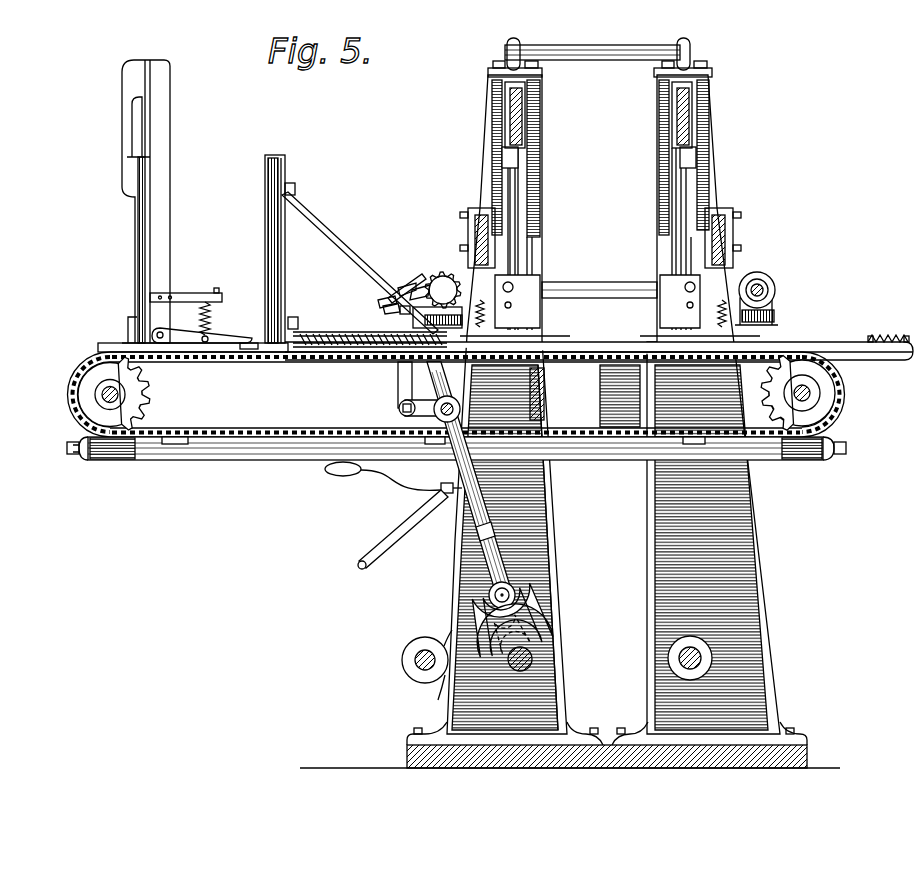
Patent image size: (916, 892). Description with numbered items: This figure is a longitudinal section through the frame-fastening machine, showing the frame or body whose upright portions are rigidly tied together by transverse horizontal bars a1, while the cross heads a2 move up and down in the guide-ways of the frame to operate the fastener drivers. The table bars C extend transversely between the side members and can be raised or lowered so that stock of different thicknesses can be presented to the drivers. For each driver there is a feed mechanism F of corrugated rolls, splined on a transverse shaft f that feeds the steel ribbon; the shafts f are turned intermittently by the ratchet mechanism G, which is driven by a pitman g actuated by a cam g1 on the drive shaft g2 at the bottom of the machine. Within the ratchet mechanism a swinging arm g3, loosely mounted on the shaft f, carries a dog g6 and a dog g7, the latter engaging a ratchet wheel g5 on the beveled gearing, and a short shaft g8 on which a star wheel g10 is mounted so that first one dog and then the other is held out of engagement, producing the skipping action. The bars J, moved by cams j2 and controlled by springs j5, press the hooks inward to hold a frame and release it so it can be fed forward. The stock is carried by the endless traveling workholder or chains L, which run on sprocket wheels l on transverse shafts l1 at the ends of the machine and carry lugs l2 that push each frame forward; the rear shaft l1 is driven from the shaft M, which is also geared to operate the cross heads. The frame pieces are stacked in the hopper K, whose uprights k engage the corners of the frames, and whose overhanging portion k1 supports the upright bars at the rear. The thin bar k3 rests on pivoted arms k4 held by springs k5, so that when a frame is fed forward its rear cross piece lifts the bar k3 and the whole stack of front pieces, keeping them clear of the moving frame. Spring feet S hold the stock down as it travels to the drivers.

The transverse horizontal bar a1 is at (480, 234).
The cross head a2 is at (520, 128).
The table bar C is at (540, 406).
The feed mechanism F is at (775, 320).
The bar J is at (565, 339).
The spring j5 is at (887, 332).
The transverse shaft f is at (450, 290).
The ratchet mechanism G is at (445, 272).
The pitman g is at (430, 378).
The cam g1 is at (520, 640).
The drive shaft g2 is at (532, 660).
The swinging arm g3 is at (390, 300).
The ratchet wheel g5 is at (425, 283).
The dog g6 is at (414, 282).
The dog g7 is at (406, 292).
The short shaft g8 is at (405, 313).
The star wheel g10 is at (390, 308).
The spring foot S is at (333, 332).
The hopper K is at (143, 190).
The upright k is at (142, 215).
The overhanging portion k1 is at (128, 130).
The thin bar k3 is at (250, 350).
The pivoted arm k4 is at (190, 340).
The spring k5 is at (212, 310).
The endless traveling workholder chain L is at (70, 394).
The sprocket wheel l is at (170, 390).
The transverse shaft l1 is at (104, 398).
The lug l2 is at (176, 446).
The cam j2 is at (398, 390).
The shaft M is at (680, 660).